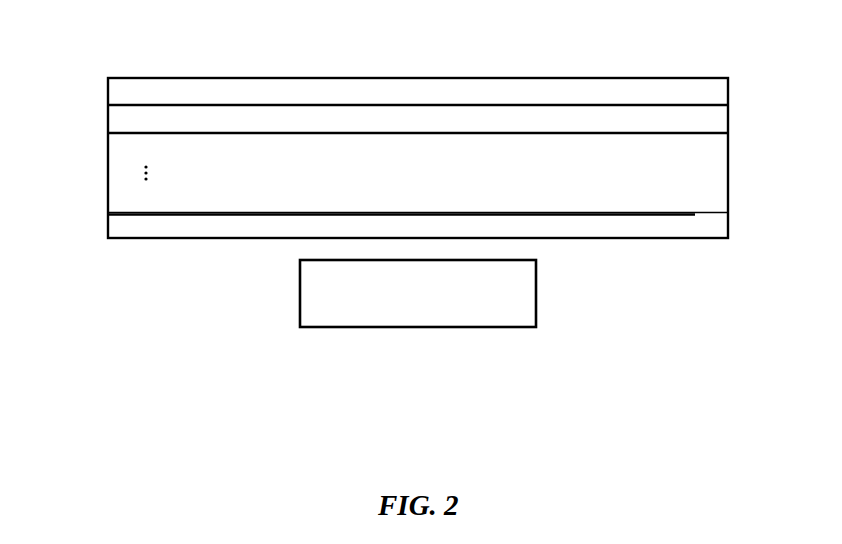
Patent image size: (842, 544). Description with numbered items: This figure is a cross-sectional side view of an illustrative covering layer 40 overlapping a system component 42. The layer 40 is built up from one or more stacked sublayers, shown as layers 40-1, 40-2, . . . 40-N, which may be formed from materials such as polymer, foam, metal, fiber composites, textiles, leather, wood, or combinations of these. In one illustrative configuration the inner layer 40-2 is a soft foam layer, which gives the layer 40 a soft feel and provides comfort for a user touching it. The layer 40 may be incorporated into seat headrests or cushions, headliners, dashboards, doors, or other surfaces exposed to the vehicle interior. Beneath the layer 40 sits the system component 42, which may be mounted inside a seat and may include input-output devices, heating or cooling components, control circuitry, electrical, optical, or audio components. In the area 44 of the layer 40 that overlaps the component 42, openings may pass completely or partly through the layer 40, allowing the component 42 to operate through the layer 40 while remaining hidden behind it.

The layer 40 is at (741, 78).
The sublayer 40-1 is at (120, 93).
The inner layer 40-2 is at (120, 124).
The sublayer 40-N is at (120, 224).
The system component 42 is at (418, 320).
The area 44 is at (537, 58).